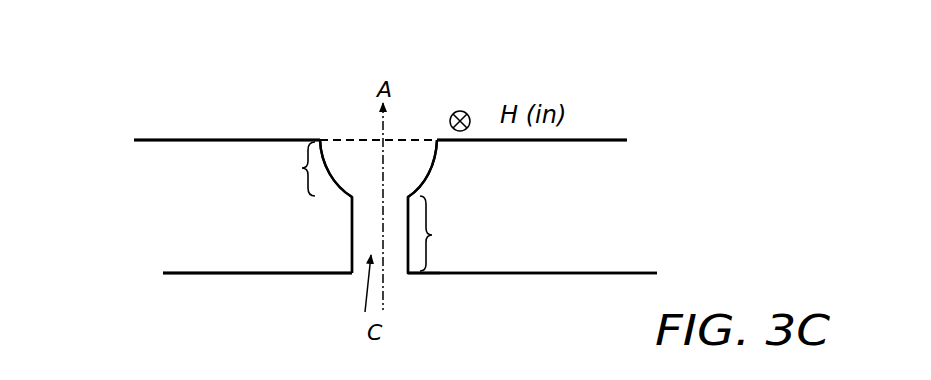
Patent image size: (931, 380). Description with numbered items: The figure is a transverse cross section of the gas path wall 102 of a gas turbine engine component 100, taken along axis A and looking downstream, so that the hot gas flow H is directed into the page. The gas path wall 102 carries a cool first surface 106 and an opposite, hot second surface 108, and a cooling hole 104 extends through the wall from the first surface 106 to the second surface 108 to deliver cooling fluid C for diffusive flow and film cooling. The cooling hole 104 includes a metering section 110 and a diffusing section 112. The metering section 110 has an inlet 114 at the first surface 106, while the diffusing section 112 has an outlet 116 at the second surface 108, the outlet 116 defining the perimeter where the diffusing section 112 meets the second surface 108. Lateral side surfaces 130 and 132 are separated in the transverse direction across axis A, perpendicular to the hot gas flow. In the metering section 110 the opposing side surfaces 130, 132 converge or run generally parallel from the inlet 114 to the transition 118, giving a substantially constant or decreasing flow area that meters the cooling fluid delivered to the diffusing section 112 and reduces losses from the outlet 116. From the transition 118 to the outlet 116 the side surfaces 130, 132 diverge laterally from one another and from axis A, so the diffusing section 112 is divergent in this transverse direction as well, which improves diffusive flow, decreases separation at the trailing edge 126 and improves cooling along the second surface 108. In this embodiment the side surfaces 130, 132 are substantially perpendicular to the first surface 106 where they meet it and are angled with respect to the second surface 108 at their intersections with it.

The gas turbine engine component 100 is at (104, 85).
The gas path wall 102 is at (232, 187).
The cooling hole 104 is at (393, 167).
The first surface 106 is at (525, 275).
The second surface 108 is at (255, 138).
The metering section 110 is at (446, 233).
The diffusing section 112 is at (288, 169).
The inlet 114 is at (395, 275).
The outlet 116 is at (345, 138).
The transition 118 is at (343, 198).
The trailing edge 126 is at (410, 138).
The lateral side surface 130 is at (350, 254).
The lateral side surface 132 is at (434, 165).